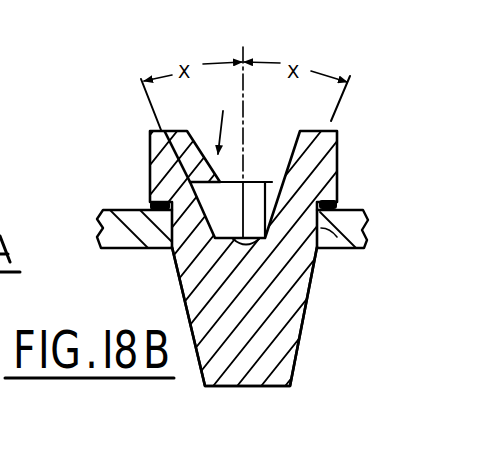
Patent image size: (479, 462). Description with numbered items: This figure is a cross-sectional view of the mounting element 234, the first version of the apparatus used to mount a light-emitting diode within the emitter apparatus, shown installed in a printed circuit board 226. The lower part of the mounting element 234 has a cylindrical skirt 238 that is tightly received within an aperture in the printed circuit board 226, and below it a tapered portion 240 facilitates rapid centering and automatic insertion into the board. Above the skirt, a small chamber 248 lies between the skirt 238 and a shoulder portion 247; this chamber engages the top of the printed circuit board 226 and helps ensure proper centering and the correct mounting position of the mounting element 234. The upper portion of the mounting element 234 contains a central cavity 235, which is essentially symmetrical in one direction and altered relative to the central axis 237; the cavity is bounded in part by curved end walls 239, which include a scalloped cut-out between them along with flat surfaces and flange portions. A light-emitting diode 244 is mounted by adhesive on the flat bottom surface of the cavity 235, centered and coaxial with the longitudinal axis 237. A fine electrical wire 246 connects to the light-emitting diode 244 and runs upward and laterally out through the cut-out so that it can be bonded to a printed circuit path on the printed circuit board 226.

The printed circuit board 226 is at (347, 208).
The mounting element 234 is at (203, 362).
The central cavity 235 is at (201, 119).
The central axis 237 is at (241, 55).
The cylindrical skirt 238 is at (333, 240).
The curved end walls 239 is at (189, 177).
The tapered portion 240 is at (306, 322).
The light-emitting diode 244 is at (247, 242).
The fine electrical wire 246 is at (272, 180).
The shoulder portion 247 is at (334, 205).
The small chamber 248 is at (150, 204).